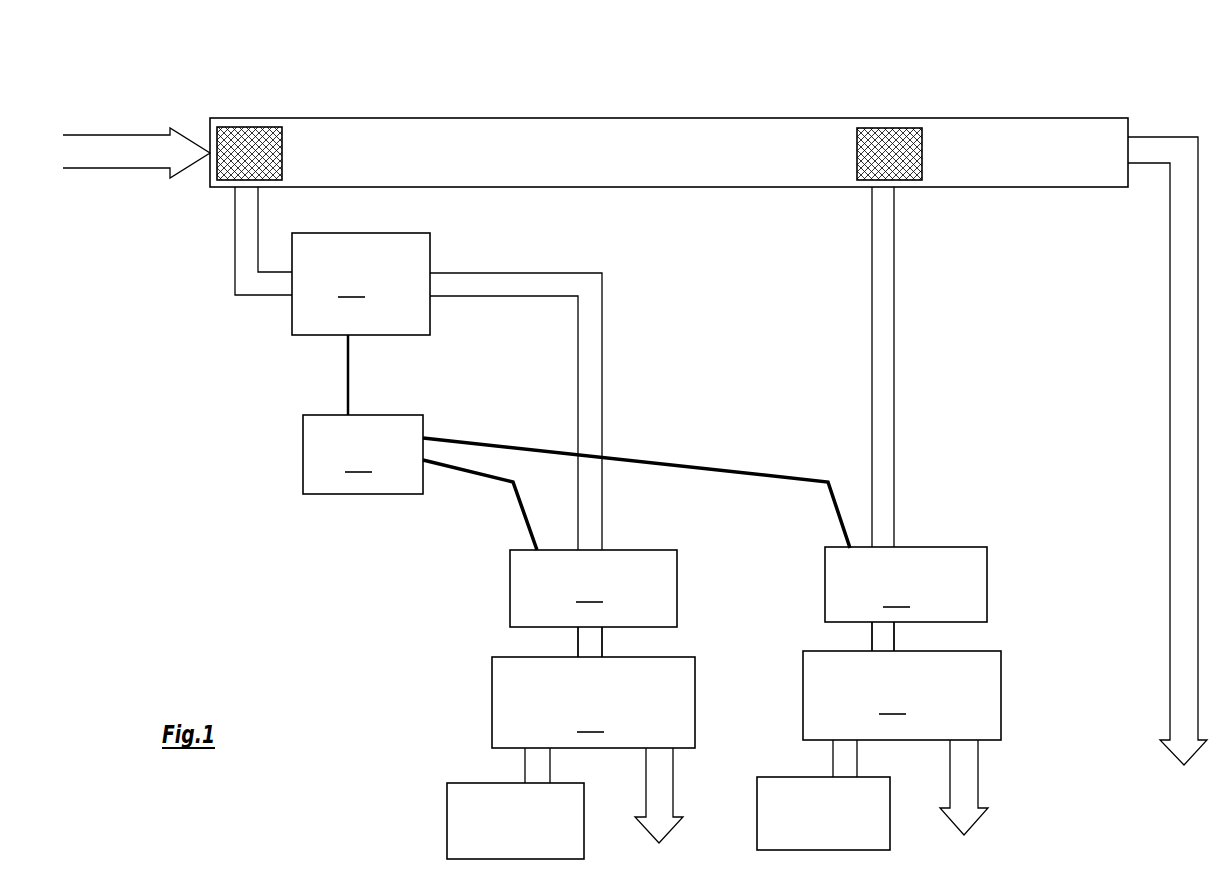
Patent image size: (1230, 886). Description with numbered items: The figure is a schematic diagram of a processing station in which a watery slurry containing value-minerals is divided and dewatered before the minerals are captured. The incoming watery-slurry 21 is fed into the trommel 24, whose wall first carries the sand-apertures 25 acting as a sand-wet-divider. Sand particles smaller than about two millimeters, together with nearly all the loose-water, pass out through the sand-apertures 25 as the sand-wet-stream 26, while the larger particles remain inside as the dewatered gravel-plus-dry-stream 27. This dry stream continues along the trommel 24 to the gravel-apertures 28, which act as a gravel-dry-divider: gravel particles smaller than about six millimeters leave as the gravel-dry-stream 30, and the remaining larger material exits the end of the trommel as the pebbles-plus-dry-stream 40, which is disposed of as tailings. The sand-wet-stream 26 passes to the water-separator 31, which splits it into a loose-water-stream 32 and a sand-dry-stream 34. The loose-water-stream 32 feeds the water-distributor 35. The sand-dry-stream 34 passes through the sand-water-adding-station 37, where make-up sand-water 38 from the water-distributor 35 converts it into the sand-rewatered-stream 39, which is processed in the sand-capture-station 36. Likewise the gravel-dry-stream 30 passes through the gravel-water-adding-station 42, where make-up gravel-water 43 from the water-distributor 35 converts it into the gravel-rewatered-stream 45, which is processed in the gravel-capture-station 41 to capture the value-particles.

The incoming watery-slurry 21 is at (127, 153).
The trommel 24 is at (487, 187).
The sand-apertures 25 is at (257, 152).
The sand-wet-stream 26 is at (247, 252).
The gravel-plus-dry-stream 27 is at (627, 148).
The gravel-apertures 28 is at (902, 155).
The gravel-dry-stream 30 is at (887, 352).
The water-separator 31 is at (361, 284).
The loose-water-stream 32 is at (330, 370).
The sand-dry-stream 34 is at (588, 348).
The water-distributor 35 is at (363, 454).
The sand-capture-station 36 is at (593, 702).
The sand-water-adding-station 37 is at (593, 588).
The make-up sand-water 38 is at (520, 507).
The sand-rewatered-stream 39 is at (592, 645).
The pebbles-plus-dry-stream 40 is at (1188, 319).
The gravel-capture-station 41 is at (902, 695).
The gravel-water-adding-station 42 is at (906, 584).
The make-up gravel-water 43 is at (837, 512).
The gravel-rewatered-stream 45 is at (883, 639).